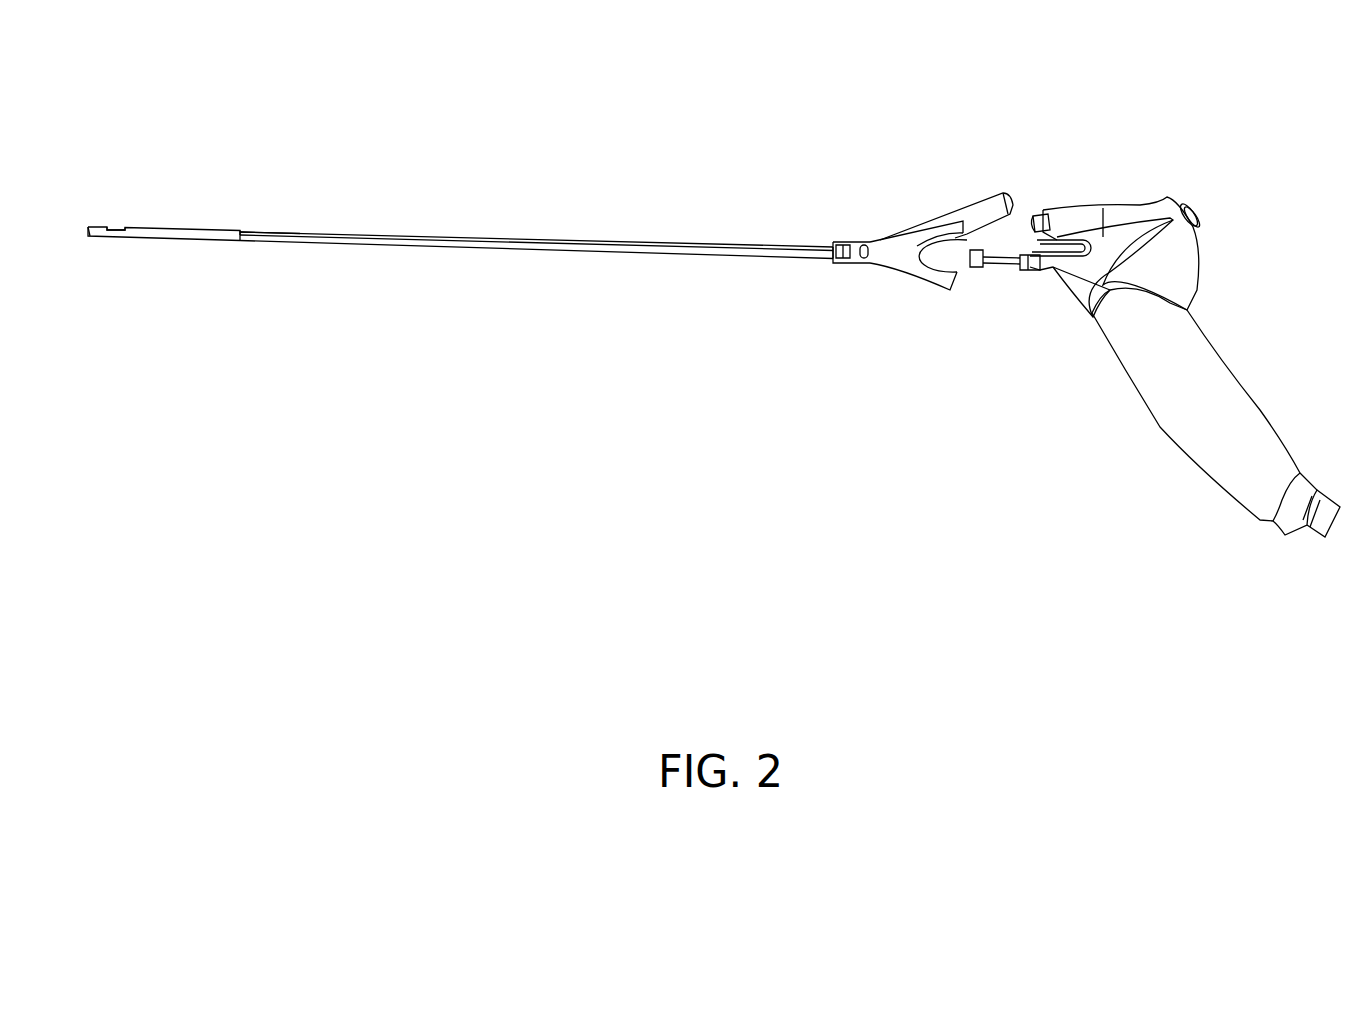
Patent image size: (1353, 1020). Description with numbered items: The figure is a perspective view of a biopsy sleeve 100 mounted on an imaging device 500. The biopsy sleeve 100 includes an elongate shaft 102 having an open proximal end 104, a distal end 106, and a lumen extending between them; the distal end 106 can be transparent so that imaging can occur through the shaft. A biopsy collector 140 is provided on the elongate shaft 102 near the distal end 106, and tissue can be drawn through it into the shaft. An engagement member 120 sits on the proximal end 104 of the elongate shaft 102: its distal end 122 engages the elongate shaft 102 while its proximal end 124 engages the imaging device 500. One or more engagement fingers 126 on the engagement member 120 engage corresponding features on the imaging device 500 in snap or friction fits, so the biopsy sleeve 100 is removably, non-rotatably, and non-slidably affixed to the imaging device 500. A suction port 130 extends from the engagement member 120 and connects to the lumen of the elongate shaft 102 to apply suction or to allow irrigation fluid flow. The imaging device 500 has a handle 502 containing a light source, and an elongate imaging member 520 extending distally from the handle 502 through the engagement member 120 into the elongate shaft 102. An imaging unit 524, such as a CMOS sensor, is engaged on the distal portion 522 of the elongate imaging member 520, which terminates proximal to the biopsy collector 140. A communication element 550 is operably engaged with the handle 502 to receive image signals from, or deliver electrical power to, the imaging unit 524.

The biopsy sleeve 100 is at (342, 180).
The elongate shaft 102 is at (210, 227).
The proximal end 104 is at (830, 243).
The distal end 106 is at (88, 238).
The engagement member 120 is at (920, 188).
The distal end 122 is at (858, 242).
The proximal end 124 is at (1033, 213).
The engagement fingers 126 is at (1005, 226).
The suction port 130 is at (977, 197).
The biopsy collector 140 is at (110, 221).
The imaging device 500 is at (1038, 362).
The handle 502 is at (1157, 428).
The elongate imaging member 520 is at (488, 247).
The distal portion 522 is at (246, 249).
The imaging unit 524 is at (240, 242).
The communication element 550 is at (1197, 222).